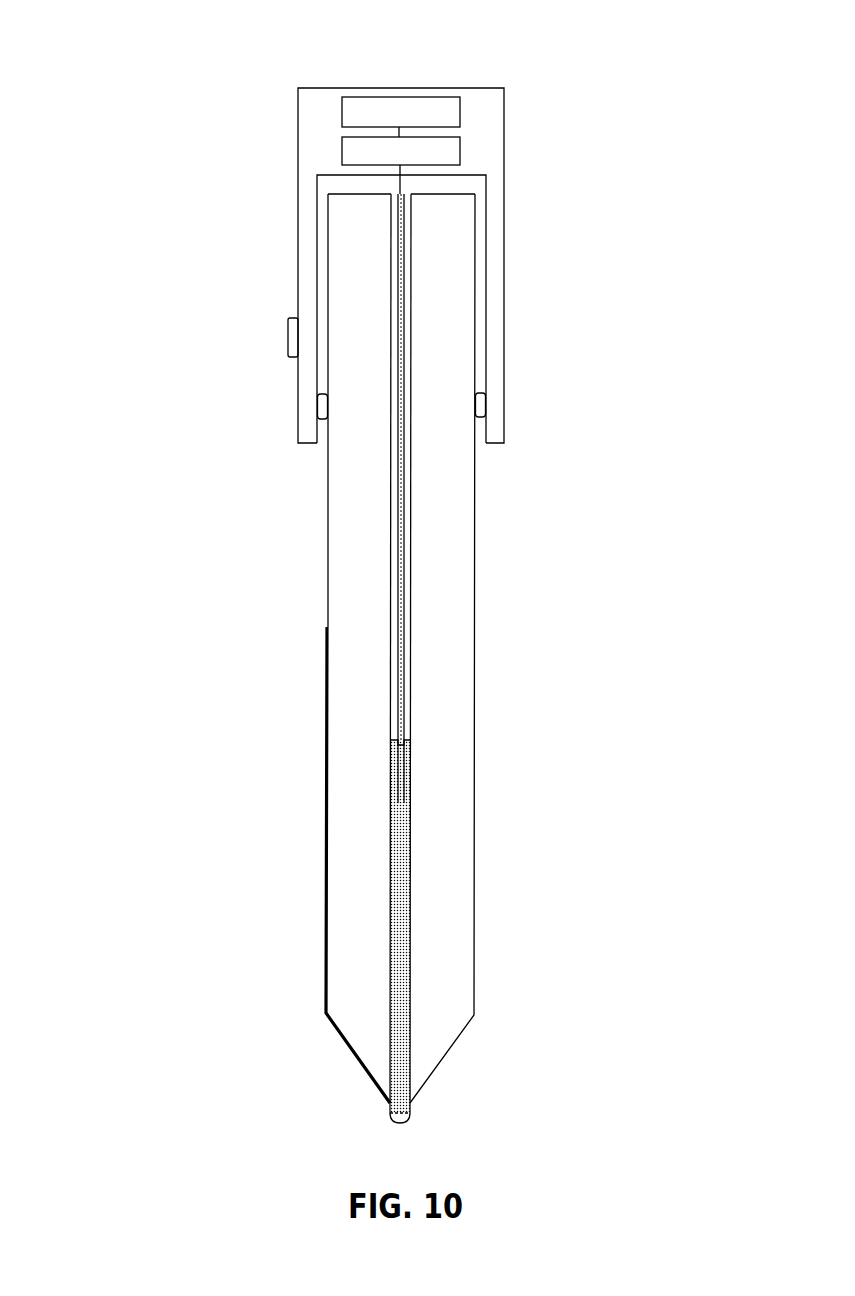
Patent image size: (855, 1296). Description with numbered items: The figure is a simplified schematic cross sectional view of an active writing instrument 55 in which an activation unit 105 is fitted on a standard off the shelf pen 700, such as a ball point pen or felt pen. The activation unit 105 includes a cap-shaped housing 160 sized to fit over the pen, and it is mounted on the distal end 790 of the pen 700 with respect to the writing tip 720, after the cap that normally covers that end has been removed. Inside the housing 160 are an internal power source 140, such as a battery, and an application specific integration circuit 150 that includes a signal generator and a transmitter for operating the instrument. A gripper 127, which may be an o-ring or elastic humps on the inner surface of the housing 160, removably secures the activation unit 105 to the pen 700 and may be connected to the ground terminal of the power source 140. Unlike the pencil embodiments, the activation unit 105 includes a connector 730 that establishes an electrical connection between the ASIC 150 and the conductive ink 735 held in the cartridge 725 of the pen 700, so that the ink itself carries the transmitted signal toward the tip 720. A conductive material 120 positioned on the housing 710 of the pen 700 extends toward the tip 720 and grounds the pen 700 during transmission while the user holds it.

The biopsy device 55 is at (163, 553).
The activation unit 105 is at (262, 98).
The internal power source 140 is at (405, 97).
The application specific integration circuit (ASIC) 150 is at (460, 152).
The connector 730 is at (403, 185).
The distal end 790 is at (352, 193).
The cartridge 725 is at (412, 278).
The housing 160 is at (503, 325).
The gripper 127 is at (487, 408).
The pen 700 is at (550, 633).
The housing of pen 710 is at (458, 538).
The conductive ink 735 is at (393, 858).
The conductive material 120 is at (325, 963).
The writing tip 720 is at (388, 1122).